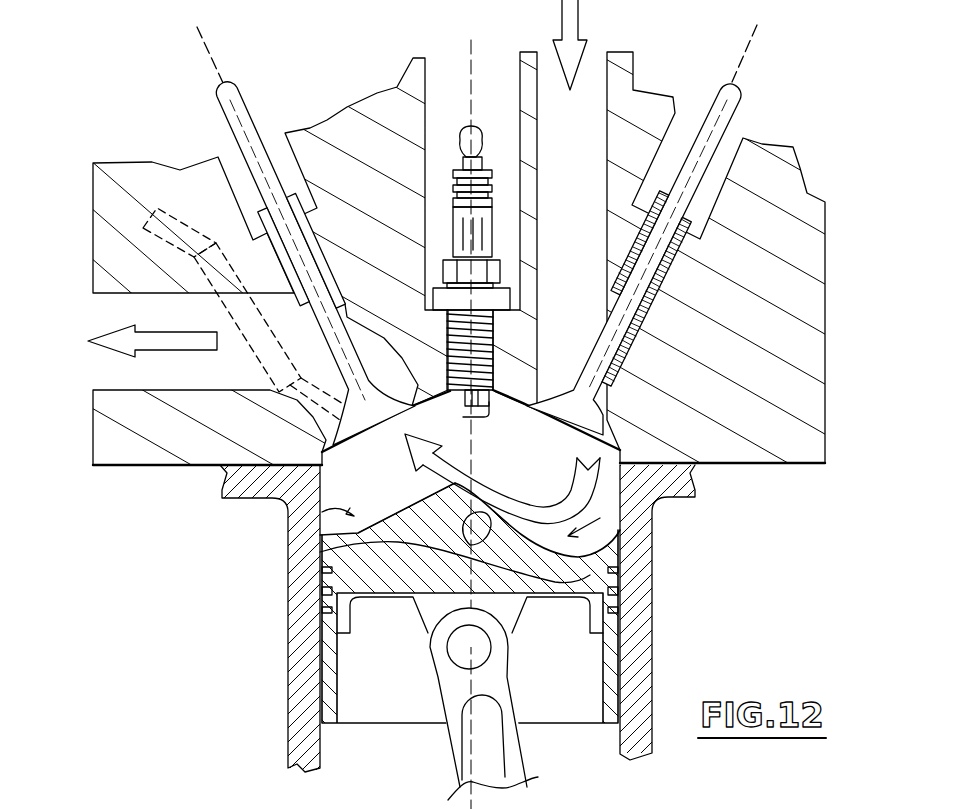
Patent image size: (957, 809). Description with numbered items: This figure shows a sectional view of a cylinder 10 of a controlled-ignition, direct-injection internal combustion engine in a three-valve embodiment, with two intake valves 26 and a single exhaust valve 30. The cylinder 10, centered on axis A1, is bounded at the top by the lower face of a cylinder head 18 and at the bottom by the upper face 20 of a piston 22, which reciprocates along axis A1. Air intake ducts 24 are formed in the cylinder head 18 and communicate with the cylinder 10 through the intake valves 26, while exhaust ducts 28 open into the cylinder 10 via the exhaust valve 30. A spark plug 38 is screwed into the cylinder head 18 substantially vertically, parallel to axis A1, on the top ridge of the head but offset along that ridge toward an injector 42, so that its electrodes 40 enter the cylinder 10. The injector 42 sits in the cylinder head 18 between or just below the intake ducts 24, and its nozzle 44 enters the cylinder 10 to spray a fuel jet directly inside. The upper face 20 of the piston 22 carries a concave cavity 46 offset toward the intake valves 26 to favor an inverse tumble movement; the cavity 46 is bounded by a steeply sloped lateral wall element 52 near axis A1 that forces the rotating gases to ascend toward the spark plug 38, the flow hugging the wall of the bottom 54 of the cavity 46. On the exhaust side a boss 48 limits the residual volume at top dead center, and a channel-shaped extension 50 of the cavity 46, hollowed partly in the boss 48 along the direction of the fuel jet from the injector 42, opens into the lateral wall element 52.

The cylinder 10 is at (472, 494).
The cylinder head 18 is at (800, 391).
The upper face 20 is at (302, 517).
The piston 22 is at (337, 601).
The air intake duct 24 is at (583, 133).
The intake valve 26 is at (718, 118).
The exhaust duct 28 is at (155, 355).
The exhaust valve 30 is at (248, 130).
The spark plug 38 is at (483, 236).
The electrodes 40 is at (473, 403).
The injector 42 is at (223, 237).
The nozzle 44 is at (405, 435).
The concave cavity 46 is at (558, 533).
The boss 48 is at (430, 488).
The extension 50 is at (343, 538).
The lateral wall element 52 is at (388, 580).
The bottom 54 is at (473, 681).
The axis A1 is at (468, 88).